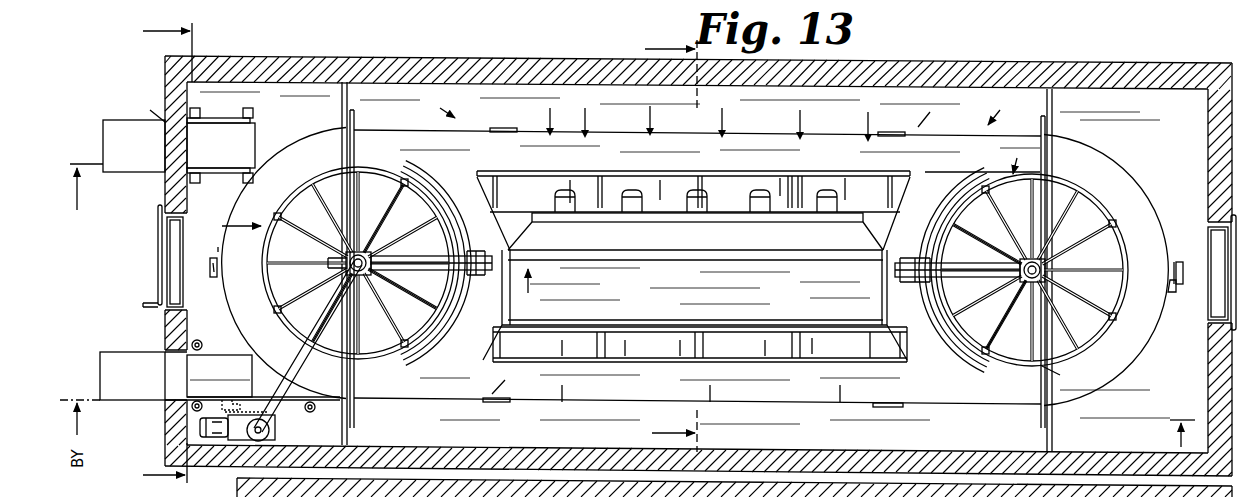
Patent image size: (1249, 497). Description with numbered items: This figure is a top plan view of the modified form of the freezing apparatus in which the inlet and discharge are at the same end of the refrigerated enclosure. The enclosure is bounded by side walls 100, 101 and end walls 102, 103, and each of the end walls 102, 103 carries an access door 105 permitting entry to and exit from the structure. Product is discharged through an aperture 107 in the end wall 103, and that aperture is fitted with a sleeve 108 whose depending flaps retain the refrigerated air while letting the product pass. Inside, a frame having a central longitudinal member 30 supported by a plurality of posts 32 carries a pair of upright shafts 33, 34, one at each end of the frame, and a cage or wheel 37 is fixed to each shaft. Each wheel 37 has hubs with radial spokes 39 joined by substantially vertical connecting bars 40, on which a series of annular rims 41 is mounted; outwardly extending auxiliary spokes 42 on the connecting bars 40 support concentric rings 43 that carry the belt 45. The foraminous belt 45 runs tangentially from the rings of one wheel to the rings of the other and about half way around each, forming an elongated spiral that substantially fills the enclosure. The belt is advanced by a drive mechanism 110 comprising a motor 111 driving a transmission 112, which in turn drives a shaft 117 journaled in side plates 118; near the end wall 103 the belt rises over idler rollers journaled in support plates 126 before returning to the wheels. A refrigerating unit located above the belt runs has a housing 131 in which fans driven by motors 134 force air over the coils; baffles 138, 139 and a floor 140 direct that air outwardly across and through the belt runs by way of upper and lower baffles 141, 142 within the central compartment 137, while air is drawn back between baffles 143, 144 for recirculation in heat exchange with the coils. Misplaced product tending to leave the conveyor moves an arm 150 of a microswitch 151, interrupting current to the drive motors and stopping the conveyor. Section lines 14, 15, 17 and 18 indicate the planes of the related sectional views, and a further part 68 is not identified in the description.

The section line 14- 14 is at (622, 423).
The section line 15- 15 is at (159, 248).
The section line 17- 17 is at (313, 232).
The section line 18- 18 is at (661, 244).
The central longitudinal member 30 is at (432, 247).
The posts 32 is at (513, 298).
The upright shaft 33 is at (695, 266).
The upright shaft 34 is at (1046, 270).
The cage or wheel 37 is at (610, 189).
The radial spokes 39 is at (378, 236).
The connecting bars 40 is at (392, 184).
The annular rims 41 is at (287, 207).
The auxiliary spokes 42 is at (391, 216).
The concentric rings 43 is at (396, 303).
The belt 45 is at (604, 132).
The drive chain 68 is at (283, 412).
The side wall 100 is at (888, 453).
The side wall 101 is at (915, 63).
The end wall 102 is at (1207, 142).
The end wall 103 is at (164, 79).
The access door 105 is at (158, 256).
The aperture 107 is at (166, 352).
The sleeve 108 is at (103, 120).
The drive mechanism 110 is at (220, 440).
The motor 111 is at (213, 438).
The transmission 112 is at (278, 437).
The shaft 117 is at (228, 400).
The side plates 118 is at (252, 388).
The support plates 126 is at (212, 120).
The housing 131 is at (694, 287).
The motors 134 is at (725, 168).
The central area or compartment 137 is at (849, 101).
The baffle 138 is at (503, 351).
The baffle 139 is at (902, 345).
The floor 140 is at (672, 214).
The upper baffle 141 is at (349, 97).
The lower baffle 142 is at (792, 158).
The baffle 143 is at (480, 172).
The baffle 144 is at (925, 172).
The arm 150 is at (1176, 292).
The microswitch 151 is at (218, 252).